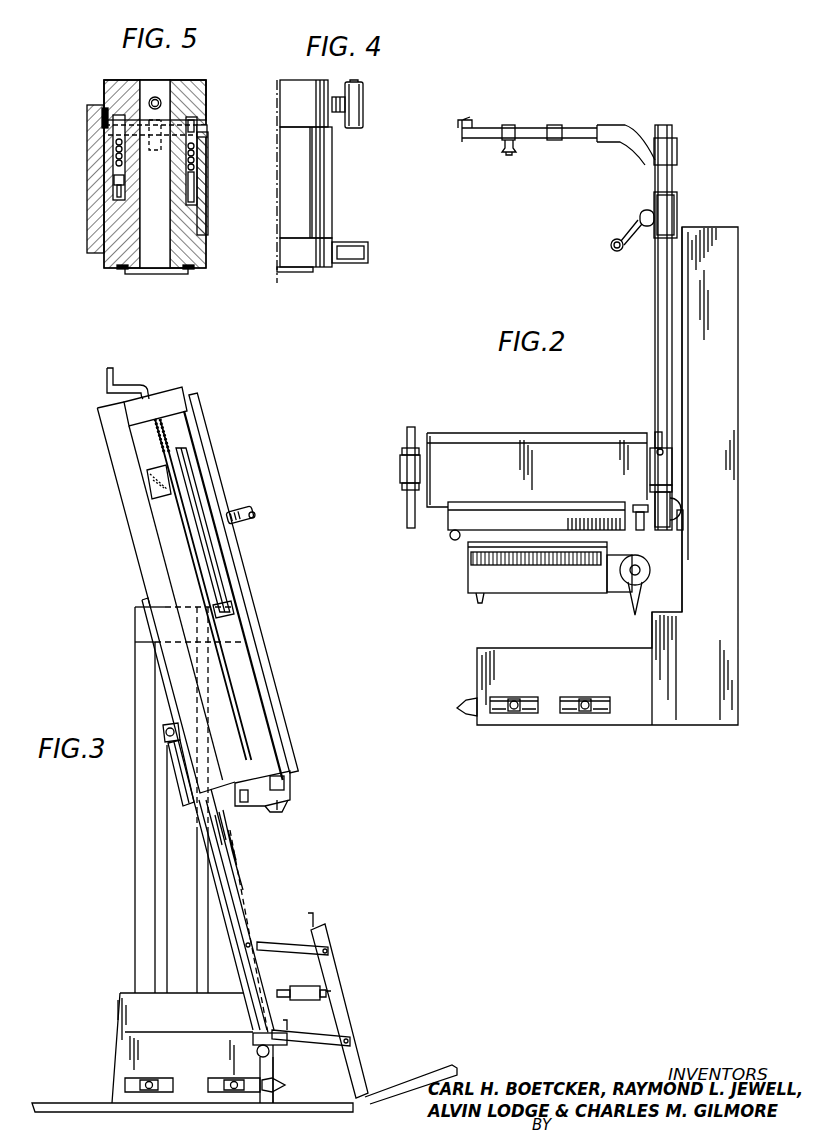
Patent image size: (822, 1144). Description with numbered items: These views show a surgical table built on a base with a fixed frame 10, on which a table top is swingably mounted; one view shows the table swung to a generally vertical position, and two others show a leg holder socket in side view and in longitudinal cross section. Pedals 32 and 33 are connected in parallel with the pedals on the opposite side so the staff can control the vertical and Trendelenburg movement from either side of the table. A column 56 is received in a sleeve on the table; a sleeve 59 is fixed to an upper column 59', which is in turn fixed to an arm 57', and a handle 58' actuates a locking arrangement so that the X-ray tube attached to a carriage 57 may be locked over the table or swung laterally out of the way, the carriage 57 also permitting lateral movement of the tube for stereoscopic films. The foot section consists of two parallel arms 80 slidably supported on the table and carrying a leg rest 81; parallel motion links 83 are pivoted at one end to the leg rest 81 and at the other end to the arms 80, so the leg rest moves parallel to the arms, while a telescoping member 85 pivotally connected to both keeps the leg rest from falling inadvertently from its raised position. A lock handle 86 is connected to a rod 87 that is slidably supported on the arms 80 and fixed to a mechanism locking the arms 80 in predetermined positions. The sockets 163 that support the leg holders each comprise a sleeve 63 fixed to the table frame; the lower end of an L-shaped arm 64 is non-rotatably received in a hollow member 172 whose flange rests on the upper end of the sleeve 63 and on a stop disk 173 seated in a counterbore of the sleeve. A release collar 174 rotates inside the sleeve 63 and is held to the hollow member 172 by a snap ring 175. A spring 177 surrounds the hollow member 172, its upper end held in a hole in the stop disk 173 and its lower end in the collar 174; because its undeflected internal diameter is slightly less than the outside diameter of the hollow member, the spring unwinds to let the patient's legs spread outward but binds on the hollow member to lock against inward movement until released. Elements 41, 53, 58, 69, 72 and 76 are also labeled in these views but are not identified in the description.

In FIG. 2, the fixed frame 10 is at (738, 528).
In FIG. 2, the pedal 32 is at (514, 713).
In FIG. 2, the pedal 33 is at (585, 713).
In FIG. 5, the plate 41 is at (88, 172).
In FIG. 3, the handle 53 is at (128, 385).
In FIG. 2, the column 56 is at (655, 283).
In FIG. 3, the column 56 is at (256, 516).
In FIG. 2, the carriage 57 is at (521, 152).
In FIG. 2, the arm 57' is at (558, 127).
In FIG. 2, the hook 58 is at (474, 113).
In FIG. 2, the handle 58' is at (600, 237).
In FIG. 2, the sleeve 59 is at (673, 213).
In FIG. 2, the upper column 59' is at (690, 158).
In FIG. 5, the sleeve 63 is at (205, 200).
In FIG. 5, the L-shaped arm 64 is at (156, 96).
In FIG. 3, the panel 69 is at (260, 684).
In FIG. 5, the pin 72 is at (104, 120).
In FIG. 4, the knob 76 is at (363, 114).
In FIG. 2, the parallel arms 80 is at (470, 528).
In FIG. 3, the parallel arms 80 is at (241, 893).
In FIG. 3, the leg rest 81 is at (338, 992).
In FIG. 3, the parallel motion links 83 is at (295, 952).
In FIG. 3, the telescoping member 85 is at (304, 1000).
In FIG. 2, the handle 86 is at (450, 535).
In FIG. 3, the handle 86 is at (270, 1054).
In FIG. 3, the rod 87 is at (242, 966).
In FIG. 5, the sockets 163 is at (214, 225).
In FIG. 4, the sockets 163 is at (330, 195).
In FIG. 2, the sockets 163 is at (400, 468).
In FIG. 3, the sockets 163 is at (272, 806).
In FIG. 5, the hollow member 172 is at (206, 98).
In FIG. 5, the stop disk 173 is at (204, 130).
In FIG. 5, the release collar 174 is at (117, 267).
In FIG. 5, the snap ring 175 is at (190, 270).
In FIG. 5, the spring 177 is at (193, 163).